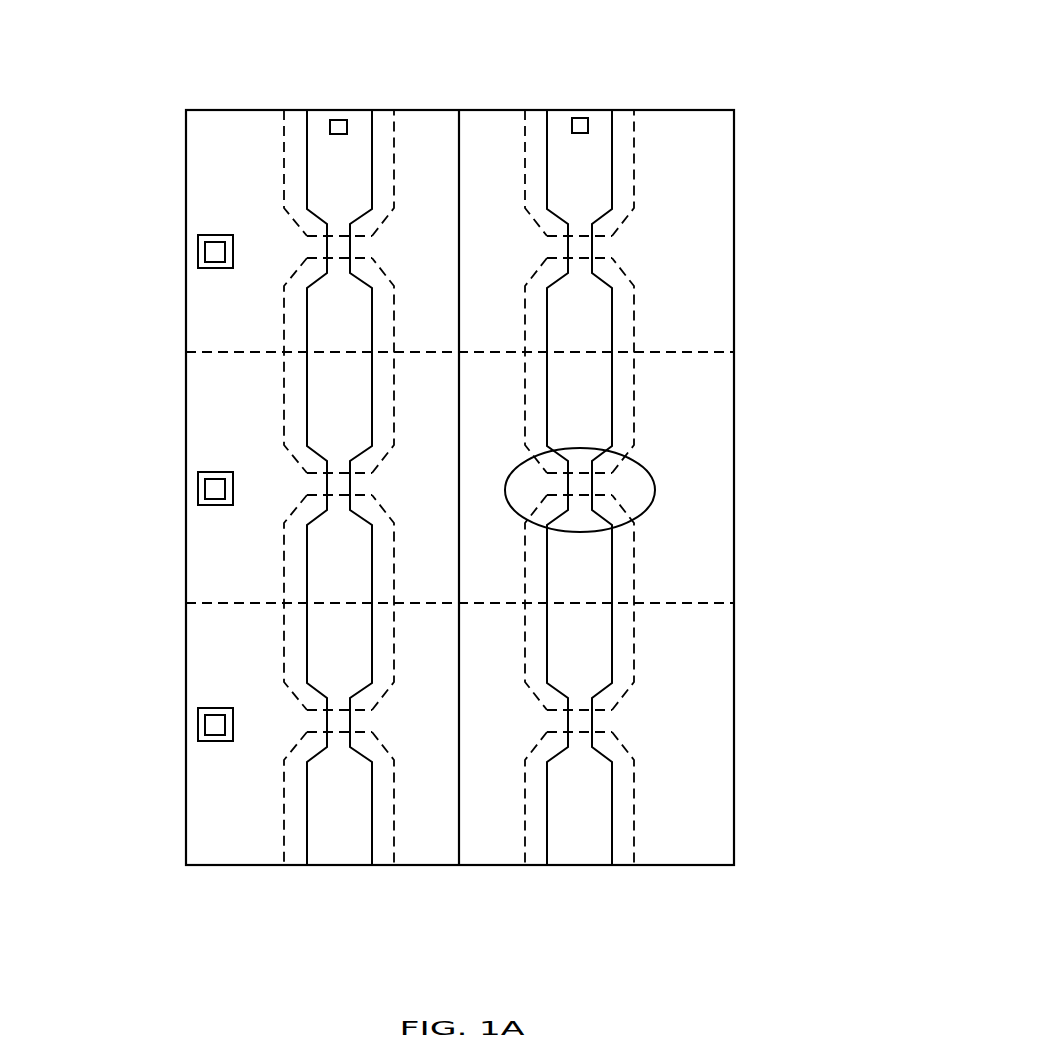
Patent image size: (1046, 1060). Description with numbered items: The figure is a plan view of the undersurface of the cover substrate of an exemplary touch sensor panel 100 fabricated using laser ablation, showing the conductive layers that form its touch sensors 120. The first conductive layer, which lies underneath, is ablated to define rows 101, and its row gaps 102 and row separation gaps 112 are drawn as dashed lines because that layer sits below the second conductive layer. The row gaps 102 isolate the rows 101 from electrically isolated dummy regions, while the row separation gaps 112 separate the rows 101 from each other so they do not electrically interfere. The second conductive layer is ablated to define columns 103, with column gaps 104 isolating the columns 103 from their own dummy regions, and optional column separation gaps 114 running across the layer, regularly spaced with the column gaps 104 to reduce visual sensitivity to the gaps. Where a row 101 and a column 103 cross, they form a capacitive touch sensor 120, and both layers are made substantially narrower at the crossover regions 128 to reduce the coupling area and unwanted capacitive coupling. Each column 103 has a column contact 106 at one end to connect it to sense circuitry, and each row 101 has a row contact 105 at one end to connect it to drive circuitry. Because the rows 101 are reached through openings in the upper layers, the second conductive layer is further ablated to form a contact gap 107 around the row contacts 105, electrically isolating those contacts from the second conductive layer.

The touch sensor panel 100 is at (795, 56).
The rows 101 is at (195, 334).
The row gaps 102 is at (394, 167).
The columns 103 is at (343, 855).
The column gaps 104 is at (657, 96).
The row contacts 105 is at (175, 740).
The column contacts 106 is at (597, 93).
The contact gap 107 is at (198, 258).
The row separation gaps 112 is at (215, 603).
The column separation gaps 114 is at (448, 852).
The touch sensors 120 is at (734, 378).
The crossover regions 128 is at (655, 490).